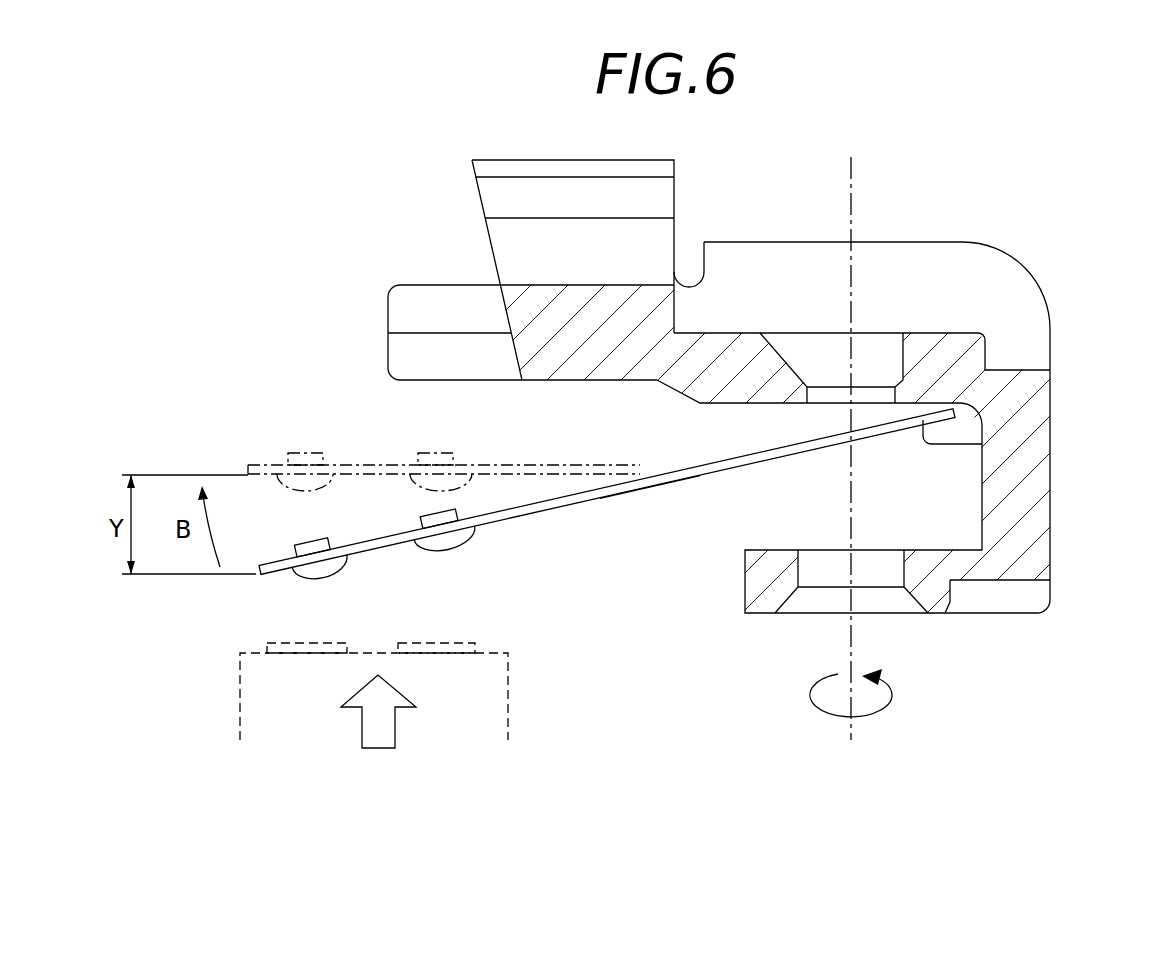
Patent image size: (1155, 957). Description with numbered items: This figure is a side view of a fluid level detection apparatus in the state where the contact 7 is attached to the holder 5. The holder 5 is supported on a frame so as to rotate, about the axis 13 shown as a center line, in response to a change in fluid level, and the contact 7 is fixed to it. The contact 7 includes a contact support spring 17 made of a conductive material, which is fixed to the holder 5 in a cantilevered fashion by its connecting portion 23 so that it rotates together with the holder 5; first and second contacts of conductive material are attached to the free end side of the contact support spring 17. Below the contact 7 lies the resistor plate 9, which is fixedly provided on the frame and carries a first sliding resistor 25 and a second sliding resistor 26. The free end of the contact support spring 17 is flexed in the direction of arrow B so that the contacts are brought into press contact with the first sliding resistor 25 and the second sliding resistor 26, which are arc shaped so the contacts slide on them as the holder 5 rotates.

The holder 5 is at (1020, 268).
The contact 7 is at (607, 494).
The resistor plate 9 is at (240, 670).
The rotation axis 13 is at (851, 218).
The contact support spring 17 is at (660, 487).
The connecting portion 23 is at (940, 422).
The first sliding resistor 25 is at (268, 643).
The second sliding resistor 26 is at (463, 642).